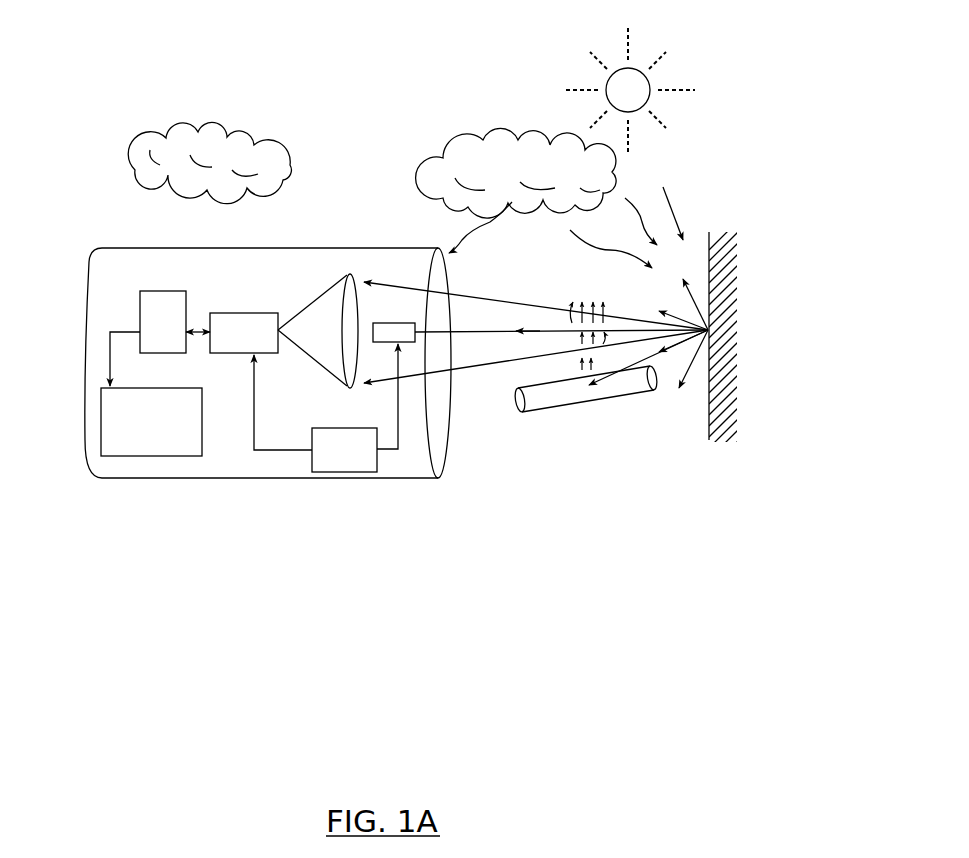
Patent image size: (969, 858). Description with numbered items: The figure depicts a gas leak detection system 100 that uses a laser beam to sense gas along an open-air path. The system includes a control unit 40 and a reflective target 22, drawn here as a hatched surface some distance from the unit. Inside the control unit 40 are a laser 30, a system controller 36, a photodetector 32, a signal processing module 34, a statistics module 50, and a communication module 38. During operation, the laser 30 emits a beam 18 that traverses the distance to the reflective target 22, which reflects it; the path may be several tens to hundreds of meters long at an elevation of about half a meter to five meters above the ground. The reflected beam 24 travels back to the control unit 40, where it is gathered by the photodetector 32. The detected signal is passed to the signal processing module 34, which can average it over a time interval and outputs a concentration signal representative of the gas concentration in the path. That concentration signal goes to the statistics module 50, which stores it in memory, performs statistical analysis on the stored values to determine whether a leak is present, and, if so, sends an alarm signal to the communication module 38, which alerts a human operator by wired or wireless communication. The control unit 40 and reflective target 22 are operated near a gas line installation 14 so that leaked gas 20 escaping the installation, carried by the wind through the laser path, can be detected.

The gas leak detection system 100 is at (180, 114).
The gas line installation 14 is at (565, 415).
The beam 18 is at (505, 330).
The leaked gas 20 is at (590, 300).
The reflective target 22 is at (708, 425).
The reflected beam 24 is at (475, 293).
The laser 30 is at (410, 323).
The photodetector 32 is at (324, 380).
The signal processing module 34 is at (258, 313).
The system controller 36 is at (348, 473).
The communication module 38 is at (101, 433).
The control unit 40 is at (213, 478).
The statistics module 50 is at (140, 306).